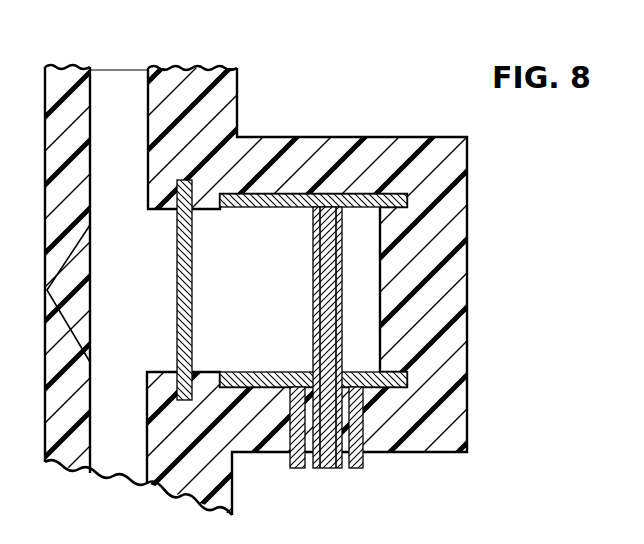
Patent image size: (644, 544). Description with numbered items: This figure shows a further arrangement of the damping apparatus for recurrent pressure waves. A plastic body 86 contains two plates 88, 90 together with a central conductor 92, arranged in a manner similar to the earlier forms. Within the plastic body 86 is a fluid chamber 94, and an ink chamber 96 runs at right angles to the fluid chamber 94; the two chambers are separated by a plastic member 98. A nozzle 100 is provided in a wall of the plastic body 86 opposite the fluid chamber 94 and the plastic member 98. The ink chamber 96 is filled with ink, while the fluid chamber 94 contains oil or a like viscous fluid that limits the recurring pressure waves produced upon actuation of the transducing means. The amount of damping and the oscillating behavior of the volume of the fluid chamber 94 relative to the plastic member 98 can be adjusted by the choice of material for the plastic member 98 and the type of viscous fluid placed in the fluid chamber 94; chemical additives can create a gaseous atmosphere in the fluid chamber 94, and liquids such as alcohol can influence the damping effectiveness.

The plastic body 86 is at (425, 111).
The plate 88 is at (263, 200).
The plate 90 is at (255, 372).
The central conductor 92 is at (326, 472).
The fluid chamber 94 is at (261, 261).
The ink chamber 96 is at (113, 88).
The plastic member 98 is at (192, 337).
The nozzle 100 is at (52, 290).